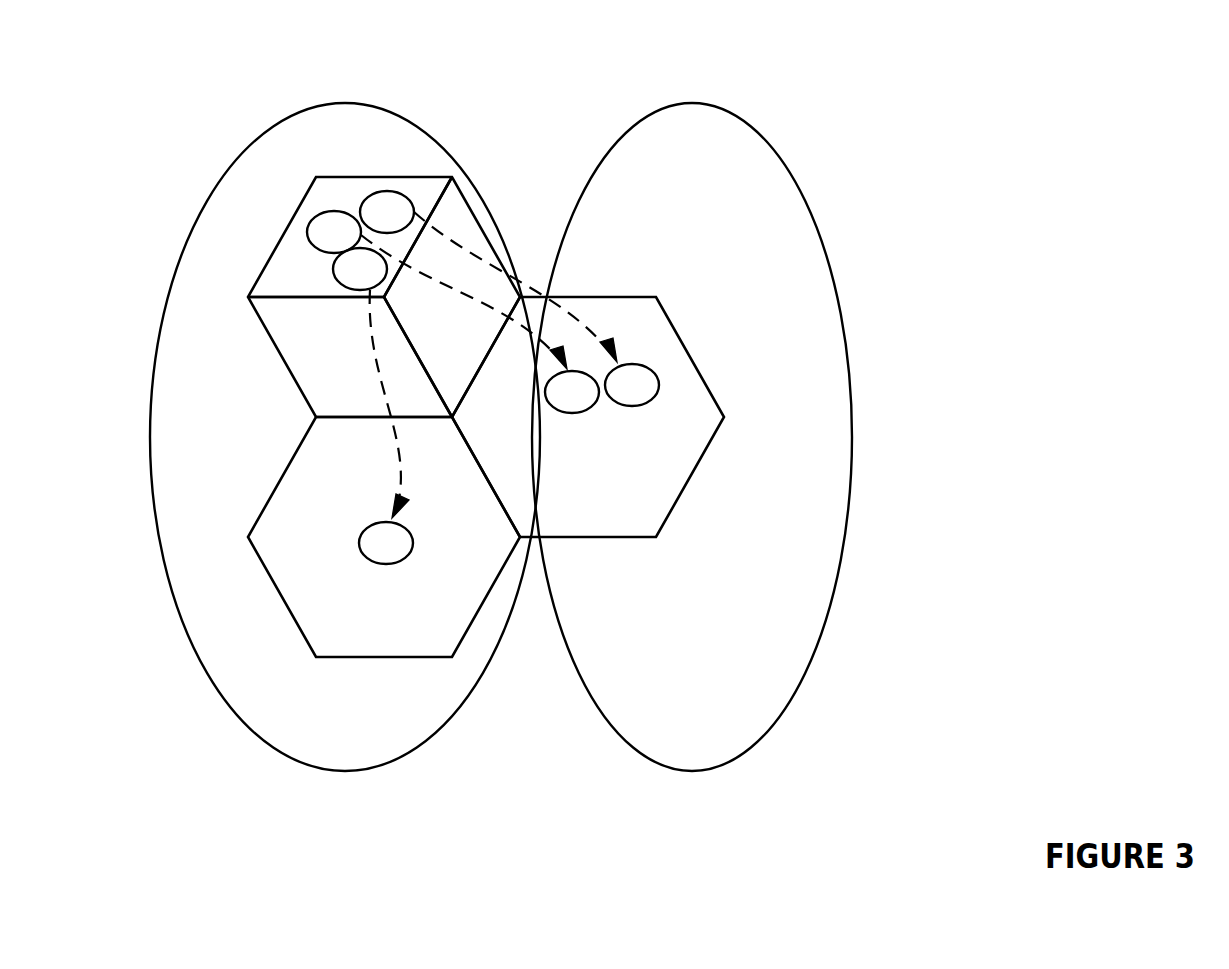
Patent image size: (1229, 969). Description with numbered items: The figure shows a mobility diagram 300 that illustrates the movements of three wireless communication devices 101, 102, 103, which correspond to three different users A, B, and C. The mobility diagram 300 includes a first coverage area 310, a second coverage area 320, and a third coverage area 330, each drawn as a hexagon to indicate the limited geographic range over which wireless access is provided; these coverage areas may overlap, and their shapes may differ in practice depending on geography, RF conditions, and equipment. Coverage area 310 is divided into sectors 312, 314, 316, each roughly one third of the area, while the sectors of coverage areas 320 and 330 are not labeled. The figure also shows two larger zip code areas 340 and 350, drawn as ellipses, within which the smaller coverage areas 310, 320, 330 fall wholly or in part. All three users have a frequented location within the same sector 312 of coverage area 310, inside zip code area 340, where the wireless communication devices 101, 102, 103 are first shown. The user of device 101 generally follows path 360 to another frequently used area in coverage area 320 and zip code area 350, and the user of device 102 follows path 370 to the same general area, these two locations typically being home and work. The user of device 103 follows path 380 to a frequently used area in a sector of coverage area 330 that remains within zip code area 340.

The mobility diagram 300 is at (975, 52).
The coverage area 1 310 is at (358, 166).
The sector 312 is at (278, 292).
The sector 314 is at (332, 403).
The sector 316 is at (405, 318).
The coverage area 2 320 is at (580, 518).
The coverage area 3 330 is at (345, 640).
The zip code area 340 is at (325, 755).
The zip code area 350 is at (670, 755).
The path 360 is at (515, 287).
The path 370 is at (464, 302).
The path 380 is at (407, 404).
The wireless communication device 101 is at (373, 222).
The wireless communication device 102 is at (320, 242).
The wireless communication device 103 is at (346, 279).